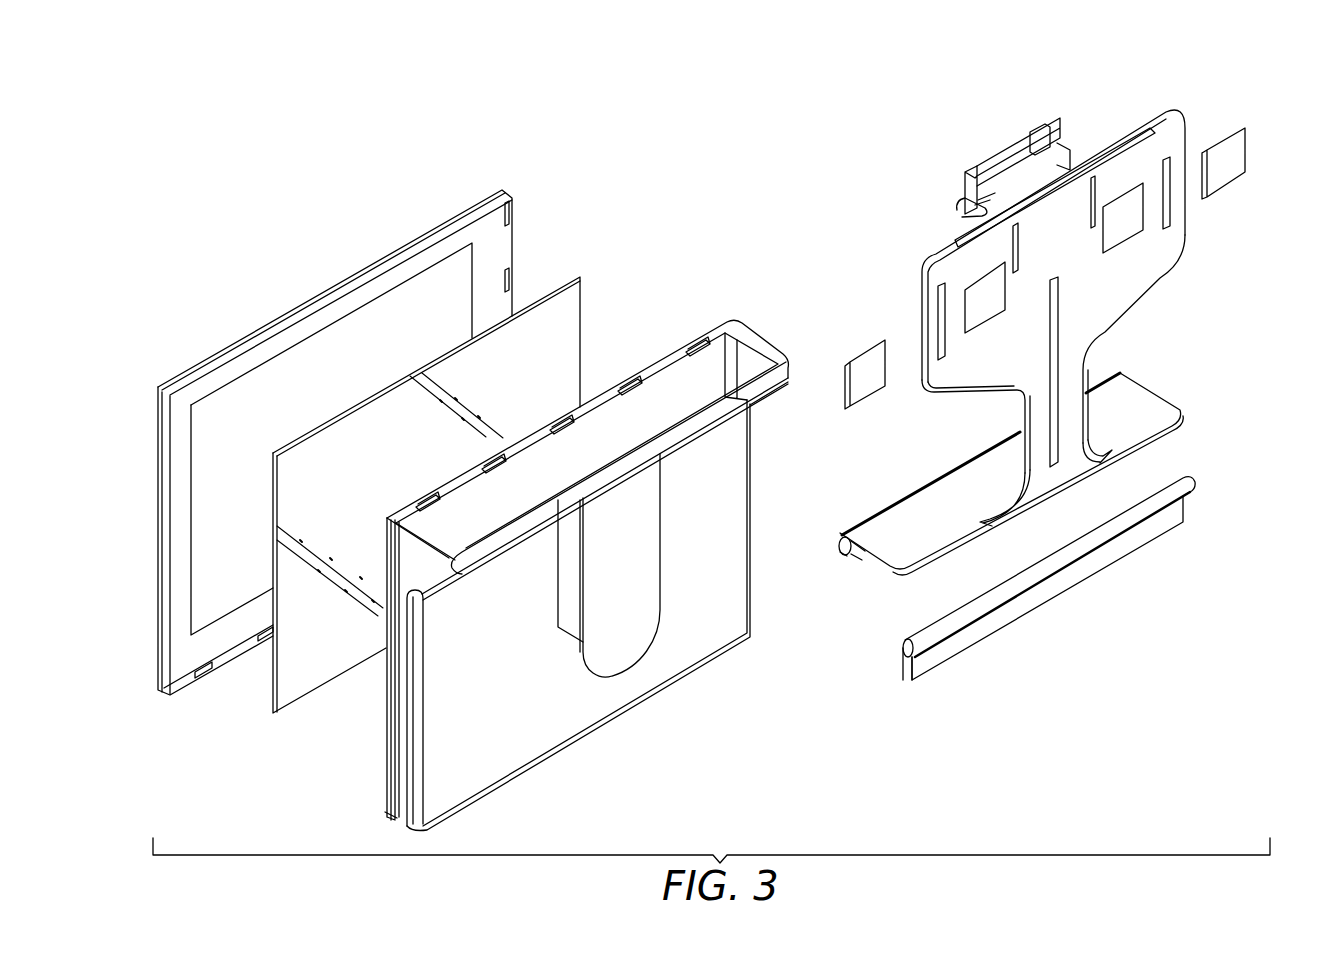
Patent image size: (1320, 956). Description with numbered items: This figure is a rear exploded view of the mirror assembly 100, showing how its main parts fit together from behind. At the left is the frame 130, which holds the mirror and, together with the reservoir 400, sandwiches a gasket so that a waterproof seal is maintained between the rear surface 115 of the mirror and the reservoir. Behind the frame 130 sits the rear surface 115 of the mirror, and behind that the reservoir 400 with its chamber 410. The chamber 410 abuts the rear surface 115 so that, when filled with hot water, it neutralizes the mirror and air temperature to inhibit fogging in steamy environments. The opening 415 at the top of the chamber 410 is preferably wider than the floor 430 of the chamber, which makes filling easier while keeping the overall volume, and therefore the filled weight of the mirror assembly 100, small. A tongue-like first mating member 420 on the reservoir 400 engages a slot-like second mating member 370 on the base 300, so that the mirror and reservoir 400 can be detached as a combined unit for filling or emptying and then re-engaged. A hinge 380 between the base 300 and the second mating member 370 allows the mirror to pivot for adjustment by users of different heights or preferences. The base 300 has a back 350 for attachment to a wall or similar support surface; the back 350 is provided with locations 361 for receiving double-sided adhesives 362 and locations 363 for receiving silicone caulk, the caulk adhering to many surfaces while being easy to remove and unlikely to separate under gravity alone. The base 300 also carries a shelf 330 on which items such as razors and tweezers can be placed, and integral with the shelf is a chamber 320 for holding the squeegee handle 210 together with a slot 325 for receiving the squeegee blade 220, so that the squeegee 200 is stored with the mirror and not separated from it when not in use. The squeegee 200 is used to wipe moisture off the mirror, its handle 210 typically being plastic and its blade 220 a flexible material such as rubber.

The mirror assembly 100 is at (336, 156).
The rear surface 115 is at (582, 293).
The frame 130 is at (228, 349).
The squeegee 200 is at (1204, 516).
The handle 210 is at (1190, 480).
The blade 220 is at (910, 680).
The base 300 is at (914, 443).
The chamber 320 is at (838, 544).
The slot 325 is at (850, 553).
The shelf 330 is at (888, 517).
The back 350 is at (1148, 253).
The locations for receiving double-sided adhesives 361 is at (992, 306).
The double-sided adhesives 362 is at (1218, 172).
The locations for receiving silicone caulk 363 is at (1140, 138).
The second mating member 370 is at (967, 188).
The hinge 380 is at (963, 226).
The reservoir 400 is at (367, 764).
The chamber 410 is at (750, 360).
The opening 415 is at (662, 378).
The first mating member 420 is at (617, 677).
The floor 430 is at (401, 826).